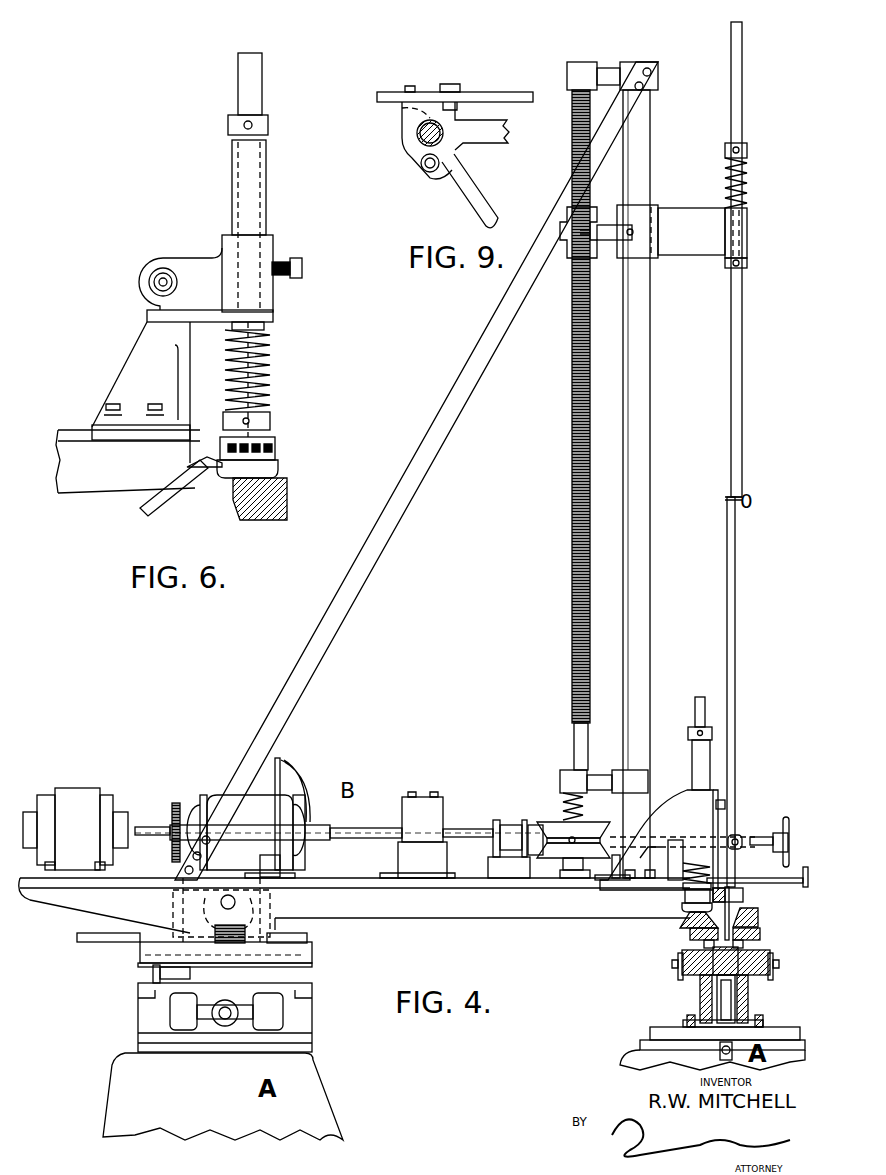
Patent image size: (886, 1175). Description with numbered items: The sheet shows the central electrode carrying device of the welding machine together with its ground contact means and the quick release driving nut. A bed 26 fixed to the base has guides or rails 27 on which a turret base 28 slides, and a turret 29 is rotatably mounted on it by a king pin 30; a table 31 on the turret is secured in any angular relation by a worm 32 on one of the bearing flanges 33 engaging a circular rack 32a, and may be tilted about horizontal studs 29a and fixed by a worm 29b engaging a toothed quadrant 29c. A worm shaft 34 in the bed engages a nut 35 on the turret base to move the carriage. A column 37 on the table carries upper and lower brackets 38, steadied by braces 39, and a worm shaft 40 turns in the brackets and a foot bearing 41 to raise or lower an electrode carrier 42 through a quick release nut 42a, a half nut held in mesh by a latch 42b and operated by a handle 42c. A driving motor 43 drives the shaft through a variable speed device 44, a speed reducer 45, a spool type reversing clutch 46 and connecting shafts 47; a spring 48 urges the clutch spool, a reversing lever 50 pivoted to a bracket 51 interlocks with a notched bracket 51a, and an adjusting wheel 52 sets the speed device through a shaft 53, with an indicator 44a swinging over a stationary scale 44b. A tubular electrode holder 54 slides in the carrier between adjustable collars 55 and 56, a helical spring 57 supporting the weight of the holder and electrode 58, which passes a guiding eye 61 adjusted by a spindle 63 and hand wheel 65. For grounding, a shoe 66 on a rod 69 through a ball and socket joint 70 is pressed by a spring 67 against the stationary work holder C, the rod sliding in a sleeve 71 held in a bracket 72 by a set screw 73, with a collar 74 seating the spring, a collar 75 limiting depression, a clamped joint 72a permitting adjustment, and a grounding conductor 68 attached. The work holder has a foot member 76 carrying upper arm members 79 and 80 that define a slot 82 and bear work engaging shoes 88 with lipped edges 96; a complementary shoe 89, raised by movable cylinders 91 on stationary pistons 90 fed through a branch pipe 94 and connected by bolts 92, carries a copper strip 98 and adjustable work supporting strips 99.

In FIG. 4, the bed 26 is at (303, 1018).
In FIG. 4, the guides or rails 27 is at (150, 996).
In FIG. 4, the turret base 28 is at (145, 985).
In FIG. 4, the turret 29 is at (282, 928).
In FIG. 4, the axially horizontal studs 29a is at (220, 898).
In FIG. 4, the worm 29b is at (307, 938).
In FIG. 4, the toothed quadrant 29c is at (215, 924).
In FIG. 4, the stud or king pin 30 is at (280, 903).
In FIG. 6, the table 31 is at (128, 461).
In FIG. 4, the table 31 is at (325, 910).
In FIG. 4, the worm 32 is at (138, 958).
In FIG. 4, the circular rack 32a is at (312, 952).
In FIG. 4, the bearing flanges 33 is at (312, 965).
In FIG. 4, the worm shaft 34 is at (215, 1012).
In FIG. 4, the nut 35 is at (197, 990).
In FIG. 4, the column 37 is at (636, 484).
In FIG. 4, the upper and lower brackets 38 is at (660, 80).
In FIG. 4, the braces 39 is at (300, 657).
In FIG. 9, the worm shaft 40 is at (443, 160).
In FIG. 4, the worm shaft 40 is at (572, 622).
In FIG. 4, the foot bearing 41 is at (565, 878).
In FIG. 4, the electrode carrier 42 is at (653, 231).
In FIG. 9, the quick release nut 42a is at (418, 148).
In FIG. 9, the latch 42b is at (498, 100).
In FIG. 9, the handle 42c is at (480, 212).
In FIG. 4, the handle 42c is at (642, 236).
In FIG. 4, the driving motor 43 is at (75, 829).
In FIG. 4, the variable speed device 44 is at (246, 836).
In FIG. 4, the indicator 44a is at (292, 768).
In FIG. 4, the stationary scale 44b is at (282, 762).
In FIG. 4, the speed reducer 45 is at (417, 835).
In FIG. 4, the spool type reversing clutch 46 is at (553, 827).
In FIG. 4, the connecting shafts 47 is at (475, 835).
In FIG. 4, the spring 48 is at (583, 808).
In FIG. 4, the reversing lever 50 is at (735, 835).
In FIG. 4, the bracket 51 is at (614, 870).
In FIG. 4, the notched bracket 51a is at (675, 918).
In FIG. 4, the controlling and adjusting wheel 52 is at (788, 815).
In FIG. 4, the shaft 53 is at (372, 842).
In FIG. 4, the tubular electrode holder 54 is at (742, 407).
In FIG. 4, the adjustable collar 55 is at (747, 150).
In FIG. 4, the adjustable collar 56 is at (747, 263).
In FIG. 4, the helical spring 57 is at (747, 183).
In FIG. 4, the electrode 58 is at (735, 600).
In FIG. 4, the electrode guiding eye 61 is at (743, 897).
In FIG. 4, the screw-threaded spindle 63 is at (753, 878).
In FIG. 4, the hand wheel 65 is at (805, 887).
In FIG. 6, the shoe 66 is at (278, 475).
In FIG. 4, the shoe 66 is at (690, 912).
In FIG. 6, the spring 67 is at (270, 390).
In FIG. 4, the spring 67 is at (696, 873).
In FIG. 6, the grounding conductor 68 is at (158, 512).
In FIG. 6, the rod 69 is at (270, 365).
In FIG. 4, the rod 69 is at (695, 708).
In FIG. 6, the ball and socket joint 70 is at (275, 452).
In FIG. 6, the sleeve 71 is at (250, 185).
In FIG. 4, the sleeve 71 is at (700, 755).
In FIG. 6, the bracket 72 is at (182, 351).
In FIG. 4, the bracket 72 is at (662, 840).
In FIG. 6, the adjustably clamped joint 72a is at (143, 272).
In FIG. 6, the set screw 73 is at (302, 268).
In FIG. 6, the collar 74 is at (270, 421).
In FIG. 6, the collar 75 is at (268, 125).
In FIG. 4, the collar 75 is at (688, 733).
In FIG. 4, the foot member 76 is at (652, 1031).
In FIG. 4, the upper arm member 79 is at (695, 929).
In FIG. 4, the upper arm member 80 is at (760, 922).
In FIG. 4, the slot 82 is at (703, 978).
In FIG. 4, the work engaging shoes 88 is at (760, 937).
In FIG. 4, the complementary shoe 89 is at (722, 993).
In FIG. 4, the stationary pistons 90 is at (748, 1010).
In FIG. 4, the movable cylinders 91 is at (748, 993).
In FIG. 4, the nutted studs or bolts 92 is at (715, 987).
In FIG. 4, the branch pipe 94 is at (718, 1052).
In FIG. 4, the lipped edge 96 is at (710, 942).
In FIG. 4, the copper strip 98 is at (715, 957).
In FIG. 4, the work supporting strips 99 is at (678, 968).
In FIG. 6, the stationary work holder C is at (287, 500).